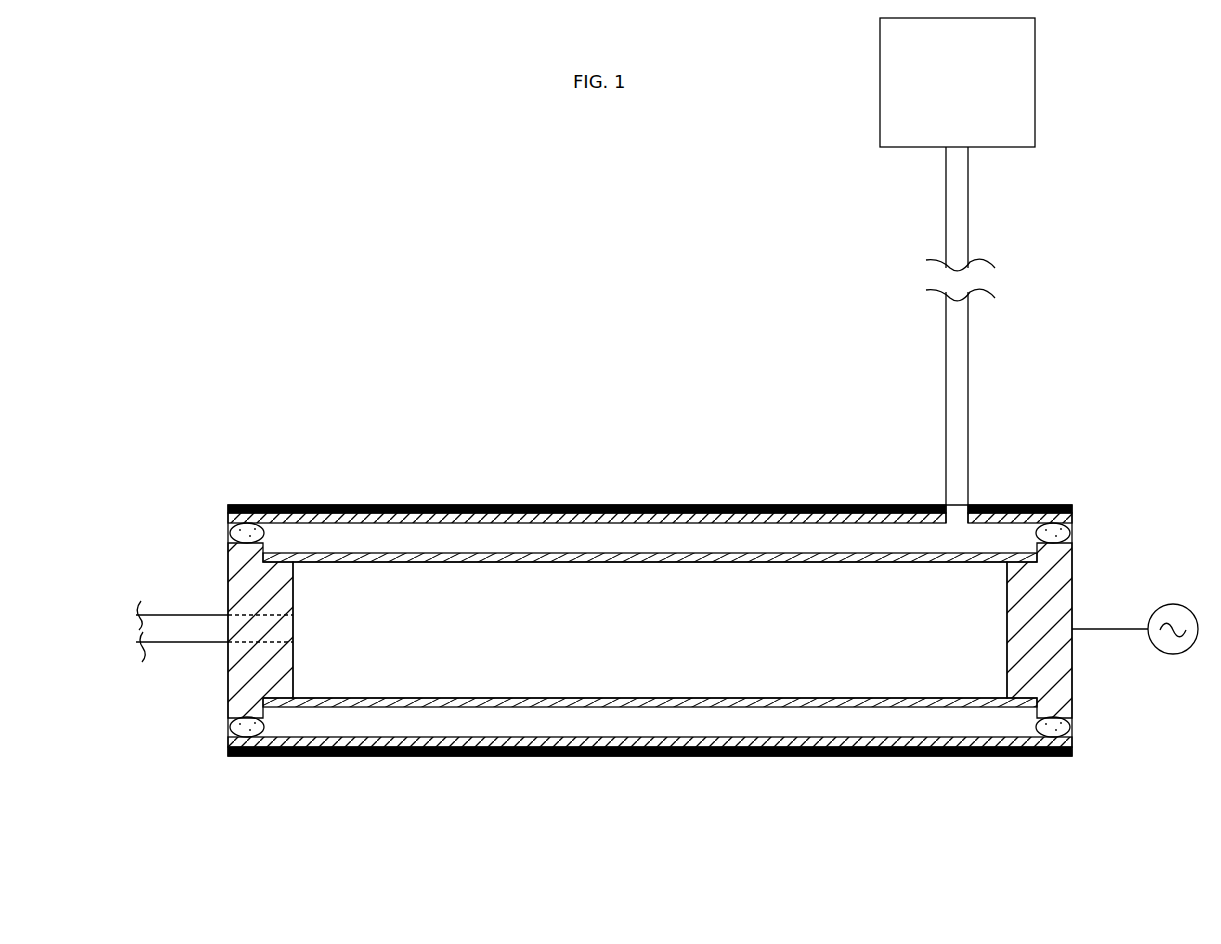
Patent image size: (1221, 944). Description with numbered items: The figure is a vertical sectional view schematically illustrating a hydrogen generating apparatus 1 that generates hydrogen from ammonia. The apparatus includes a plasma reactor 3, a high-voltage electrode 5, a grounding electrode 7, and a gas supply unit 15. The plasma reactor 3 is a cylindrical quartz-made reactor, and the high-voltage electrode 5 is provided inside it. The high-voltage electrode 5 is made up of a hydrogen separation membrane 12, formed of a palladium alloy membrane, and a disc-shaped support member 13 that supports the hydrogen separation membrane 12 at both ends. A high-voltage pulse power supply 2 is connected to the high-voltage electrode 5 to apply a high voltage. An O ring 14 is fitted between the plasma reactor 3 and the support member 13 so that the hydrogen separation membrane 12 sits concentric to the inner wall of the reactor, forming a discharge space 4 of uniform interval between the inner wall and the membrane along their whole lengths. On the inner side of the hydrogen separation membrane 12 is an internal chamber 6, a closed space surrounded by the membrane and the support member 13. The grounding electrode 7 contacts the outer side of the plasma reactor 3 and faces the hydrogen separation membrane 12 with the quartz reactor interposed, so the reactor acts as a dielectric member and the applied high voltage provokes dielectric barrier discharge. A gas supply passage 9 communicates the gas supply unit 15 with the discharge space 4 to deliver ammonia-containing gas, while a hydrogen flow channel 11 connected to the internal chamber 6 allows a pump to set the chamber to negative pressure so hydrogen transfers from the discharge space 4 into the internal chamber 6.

The hydrogen generating apparatus 1 is at (430, 160).
The high-voltage pulse power supply 2 is at (1171, 615).
The plasma reactor 3 is at (430, 505).
The discharge space 4 is at (537, 537).
The high-voltage electrode 5 is at (323, 418).
The internal chamber 6 is at (615, 668).
The grounding electrode 7 is at (697, 505).
The gas supply passage 9 is at (958, 425).
The hydrogen flow channel 11 is at (188, 633).
The hydrogen separation membrane 12 is at (325, 560).
The support member 13 is at (240, 572).
The O ring 14 is at (1072, 728).
The gas supply unit 15 is at (1022, 57).